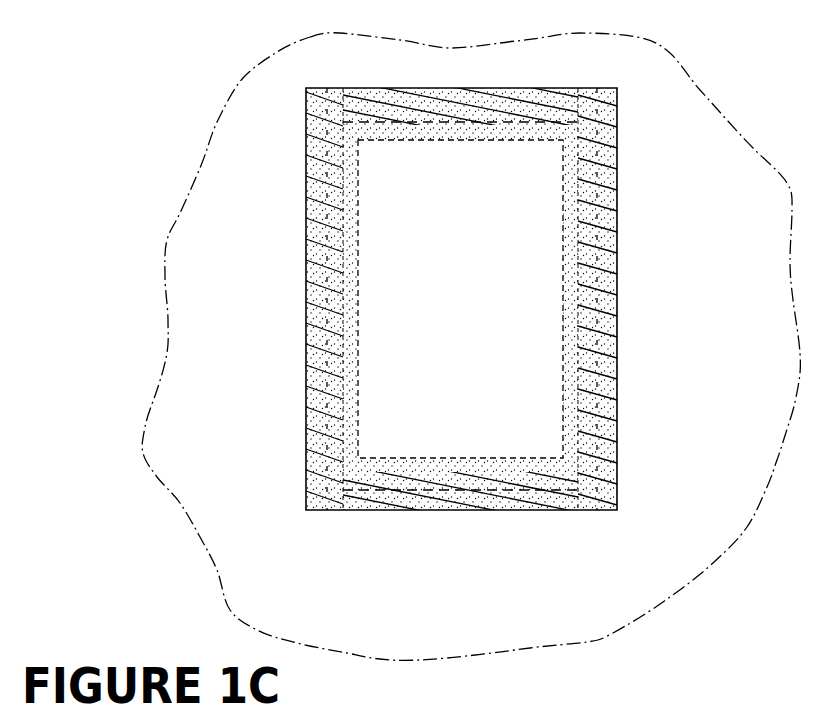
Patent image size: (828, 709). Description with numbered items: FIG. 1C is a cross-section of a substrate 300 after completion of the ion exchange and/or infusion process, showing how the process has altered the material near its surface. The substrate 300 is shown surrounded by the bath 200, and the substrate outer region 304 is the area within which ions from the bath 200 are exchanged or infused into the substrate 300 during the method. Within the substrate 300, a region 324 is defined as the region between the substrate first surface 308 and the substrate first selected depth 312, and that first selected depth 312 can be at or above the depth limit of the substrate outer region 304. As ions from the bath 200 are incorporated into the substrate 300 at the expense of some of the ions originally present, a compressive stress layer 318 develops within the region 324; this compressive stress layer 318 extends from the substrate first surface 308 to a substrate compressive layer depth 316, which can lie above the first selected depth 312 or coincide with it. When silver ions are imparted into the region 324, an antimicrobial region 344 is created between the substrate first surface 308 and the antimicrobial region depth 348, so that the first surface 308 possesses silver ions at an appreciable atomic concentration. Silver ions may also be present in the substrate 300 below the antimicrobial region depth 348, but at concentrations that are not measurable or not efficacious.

The substrate 300 is at (597, 70).
The bath 200 is at (708, 229).
The substrate outer region 304 is at (455, 463).
The region 324 is at (503, 467).
The substrate first selected depth 312 is at (423, 210).
The substrate compressive layer depth 316 is at (423, 269).
The antimicrobial region depth 348 is at (423, 333).
The substrate first surface 308 is at (617, 328).
The antimicrobial region 344 is at (608, 397).
The compressive stress layer 318 is at (608, 444).